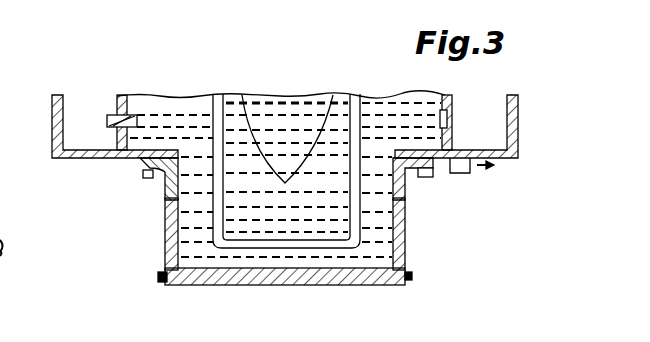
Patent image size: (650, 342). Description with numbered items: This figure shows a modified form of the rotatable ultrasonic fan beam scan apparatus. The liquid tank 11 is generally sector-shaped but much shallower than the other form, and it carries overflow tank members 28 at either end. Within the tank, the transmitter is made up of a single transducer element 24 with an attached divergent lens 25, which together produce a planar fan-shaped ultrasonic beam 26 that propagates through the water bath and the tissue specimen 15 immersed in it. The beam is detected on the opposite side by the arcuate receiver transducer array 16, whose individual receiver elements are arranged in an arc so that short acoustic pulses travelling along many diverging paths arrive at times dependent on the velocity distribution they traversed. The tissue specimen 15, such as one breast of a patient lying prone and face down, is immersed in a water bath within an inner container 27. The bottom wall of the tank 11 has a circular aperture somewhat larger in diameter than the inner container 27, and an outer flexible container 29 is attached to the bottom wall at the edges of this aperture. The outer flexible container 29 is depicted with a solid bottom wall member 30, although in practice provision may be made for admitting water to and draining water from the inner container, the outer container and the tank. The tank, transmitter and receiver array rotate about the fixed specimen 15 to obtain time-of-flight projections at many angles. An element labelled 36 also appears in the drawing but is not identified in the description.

The liquid tank 11 is at (118, 170).
The tissue specimen 15 is at (288, 95).
The arcuate receiver transducer array 16 is at (428, 104).
The transducer element 24 is at (118, 118).
The divergent lens 25 is at (132, 117).
The fan-shaped ultrasonic beam 26 is at (175, 112).
The inner container 27 is at (178, 200).
The overflow tank members 28 is at (507, 108).
The outer flexible container 29 is at (168, 242).
The solid bottom wall member 30 is at (235, 278).
The outlet 36 is at (458, 175).